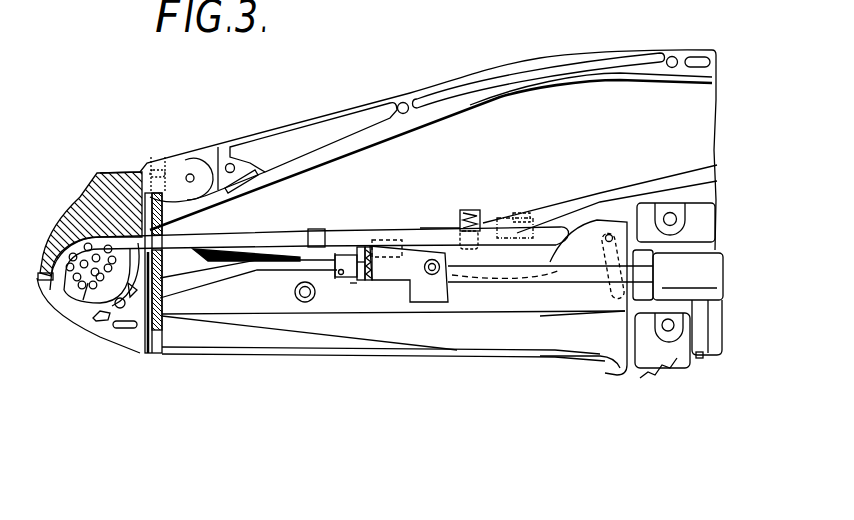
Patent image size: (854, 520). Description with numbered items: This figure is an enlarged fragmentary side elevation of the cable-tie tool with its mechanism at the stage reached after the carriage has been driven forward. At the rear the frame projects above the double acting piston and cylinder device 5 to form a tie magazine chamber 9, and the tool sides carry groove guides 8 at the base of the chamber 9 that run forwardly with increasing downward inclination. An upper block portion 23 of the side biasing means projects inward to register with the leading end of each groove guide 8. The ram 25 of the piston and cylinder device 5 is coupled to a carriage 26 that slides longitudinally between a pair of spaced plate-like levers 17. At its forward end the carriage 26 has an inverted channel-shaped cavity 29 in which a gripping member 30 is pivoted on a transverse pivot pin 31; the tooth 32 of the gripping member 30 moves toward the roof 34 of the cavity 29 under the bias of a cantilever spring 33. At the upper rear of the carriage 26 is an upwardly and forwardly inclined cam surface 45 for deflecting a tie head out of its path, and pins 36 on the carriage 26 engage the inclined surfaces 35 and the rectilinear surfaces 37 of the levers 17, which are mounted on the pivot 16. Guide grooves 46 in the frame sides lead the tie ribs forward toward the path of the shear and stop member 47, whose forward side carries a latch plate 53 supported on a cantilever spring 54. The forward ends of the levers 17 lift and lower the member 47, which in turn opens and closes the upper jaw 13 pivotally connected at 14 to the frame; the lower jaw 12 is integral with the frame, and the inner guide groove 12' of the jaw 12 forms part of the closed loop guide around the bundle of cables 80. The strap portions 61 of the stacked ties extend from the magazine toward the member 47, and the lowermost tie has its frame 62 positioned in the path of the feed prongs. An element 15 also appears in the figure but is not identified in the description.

The double acting piston and cylinder device 5 is at (694, 281).
The groove guides 8 is at (666, 178).
The tie magazine chamber 9 is at (604, 123).
The lower jaw 12 is at (88, 339).
The guide groove 12' is at (63, 350).
The upper jaw 13 is at (56, 228).
The pivot connection 14 is at (190, 175).
The boss 15 is at (210, 175).
The pivot 16 is at (305, 300).
The levers 17 is at (512, 317).
The upper block portion 23 is at (488, 225).
The ram 25 is at (580, 277).
The carriage 26 is at (450, 298).
The cavity 29 is at (369, 247).
The gripping member 30 is at (362, 265).
The pivot pin 31 is at (346, 278).
The tooth 32 is at (347, 253).
The cantilever spring 33 is at (375, 290).
The roof 34 is at (352, 285).
The inclined surfaces 35 is at (570, 236).
The pins 36 is at (467, 230).
The rectilinear surfaces 37 is at (258, 273).
The cam surface 45 is at (432, 259).
The guide grooves 46 is at (374, 248).
The shear and stop member 47 is at (160, 300).
The latch plate 53 is at (117, 329).
The cantilever spring 54 is at (149, 353).
The strap portions 61 is at (247, 231).
The tie frame 62 is at (313, 229).
The bundle of cables 80 is at (57, 310).